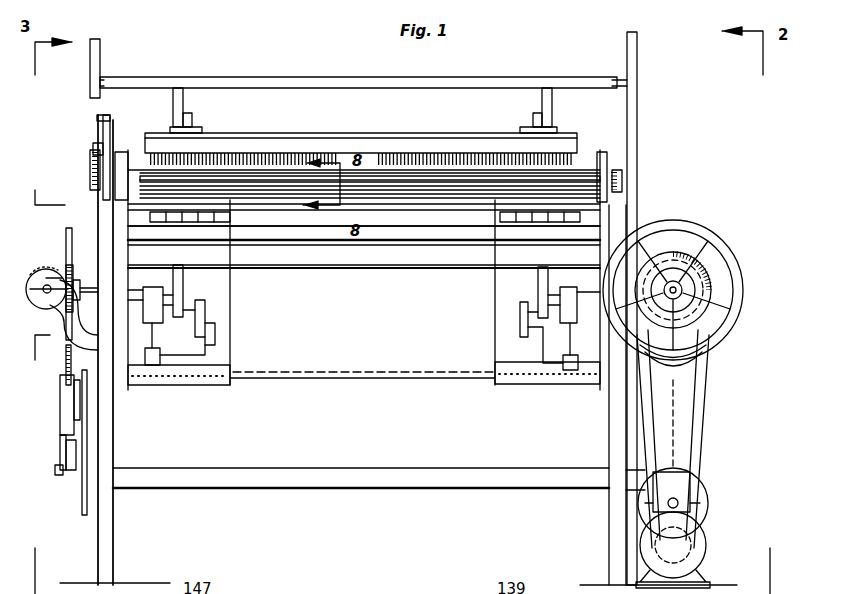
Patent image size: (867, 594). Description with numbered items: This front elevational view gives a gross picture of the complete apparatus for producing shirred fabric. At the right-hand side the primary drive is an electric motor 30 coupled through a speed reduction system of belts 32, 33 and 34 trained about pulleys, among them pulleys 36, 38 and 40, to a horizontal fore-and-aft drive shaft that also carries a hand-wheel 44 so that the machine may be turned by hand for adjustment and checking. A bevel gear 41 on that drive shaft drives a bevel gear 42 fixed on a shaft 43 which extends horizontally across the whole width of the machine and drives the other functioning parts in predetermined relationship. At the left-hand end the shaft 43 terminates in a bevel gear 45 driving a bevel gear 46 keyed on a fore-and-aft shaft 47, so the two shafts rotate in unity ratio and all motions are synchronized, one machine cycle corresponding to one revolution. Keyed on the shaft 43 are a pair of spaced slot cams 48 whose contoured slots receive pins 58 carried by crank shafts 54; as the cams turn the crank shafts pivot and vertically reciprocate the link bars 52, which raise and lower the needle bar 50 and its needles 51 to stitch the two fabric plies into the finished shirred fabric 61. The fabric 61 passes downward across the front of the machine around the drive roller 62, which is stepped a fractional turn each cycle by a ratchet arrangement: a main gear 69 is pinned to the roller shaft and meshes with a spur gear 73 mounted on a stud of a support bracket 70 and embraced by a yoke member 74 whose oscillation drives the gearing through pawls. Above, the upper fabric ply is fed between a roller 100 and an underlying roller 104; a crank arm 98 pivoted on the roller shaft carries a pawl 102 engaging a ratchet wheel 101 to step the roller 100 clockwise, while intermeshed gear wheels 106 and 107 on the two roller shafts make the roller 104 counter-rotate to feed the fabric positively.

The electric motor 30 is at (697, 548).
The belt 32 is at (712, 403).
The belt 33 is at (708, 478).
The belt 34 is at (733, 310).
The pulley 36 is at (678, 388).
The pulley 38 is at (670, 478).
The pulley 40 is at (712, 258).
The bevel gear 41 is at (665, 252).
The bevel gear 42 is at (655, 262).
The shaft 43 is at (165, 290).
The hand-wheel 44 is at (735, 328).
The bevel gear 45 is at (66, 265).
The bevel gear 46 is at (52, 300).
The shaft 47 is at (30, 283).
The slot cams 48 is at (183, 278).
The needle bar 50 is at (212, 237).
The needles 51 is at (205, 208).
The link bars 52 is at (170, 352).
The crank shafts 54 is at (218, 325).
The pin 58 is at (205, 302).
The finished shirred fabric 61 is at (345, 395).
The drive roller 62 is at (545, 392).
The main gear 69 is at (60, 372).
The support bracket 70 is at (98, 418).
The spur gear 73 is at (62, 400).
The yoke member 74 is at (62, 450).
The crank arm 98 is at (103, 126).
The roller 100 is at (152, 173).
The ratchet wheel 101 is at (90, 177).
The pawl 102 is at (93, 149).
The roller 104 is at (452, 185).
The gear wheel 106 is at (612, 172).
The gear wheel 107 is at (618, 187).